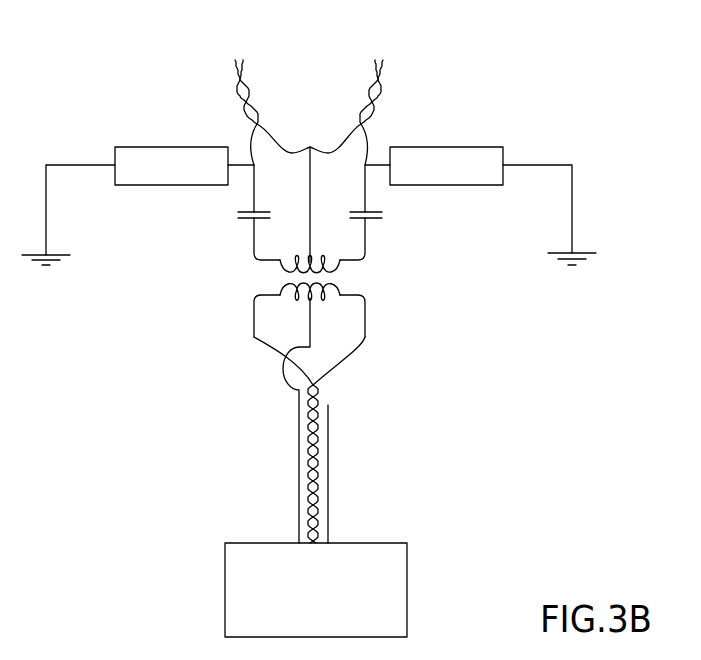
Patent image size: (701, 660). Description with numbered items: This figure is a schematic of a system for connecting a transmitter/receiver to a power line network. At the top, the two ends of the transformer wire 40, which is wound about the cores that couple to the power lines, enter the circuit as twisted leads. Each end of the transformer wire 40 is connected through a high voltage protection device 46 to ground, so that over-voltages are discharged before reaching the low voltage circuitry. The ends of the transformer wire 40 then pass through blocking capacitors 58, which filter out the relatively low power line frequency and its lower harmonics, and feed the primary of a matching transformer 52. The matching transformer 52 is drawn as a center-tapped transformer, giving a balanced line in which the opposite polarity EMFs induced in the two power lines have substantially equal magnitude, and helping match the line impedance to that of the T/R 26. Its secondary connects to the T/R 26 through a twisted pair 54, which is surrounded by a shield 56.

The T/R 26 is at (408, 588).
The transformer wire 40 is at (254, 89).
The high voltage protection devices 46 is at (157, 147).
The matching transformer 52 is at (372, 274).
The twisted pair 54 is at (318, 387).
The shield 56 is at (329, 461).
The blocking capacitors 58 is at (240, 216).